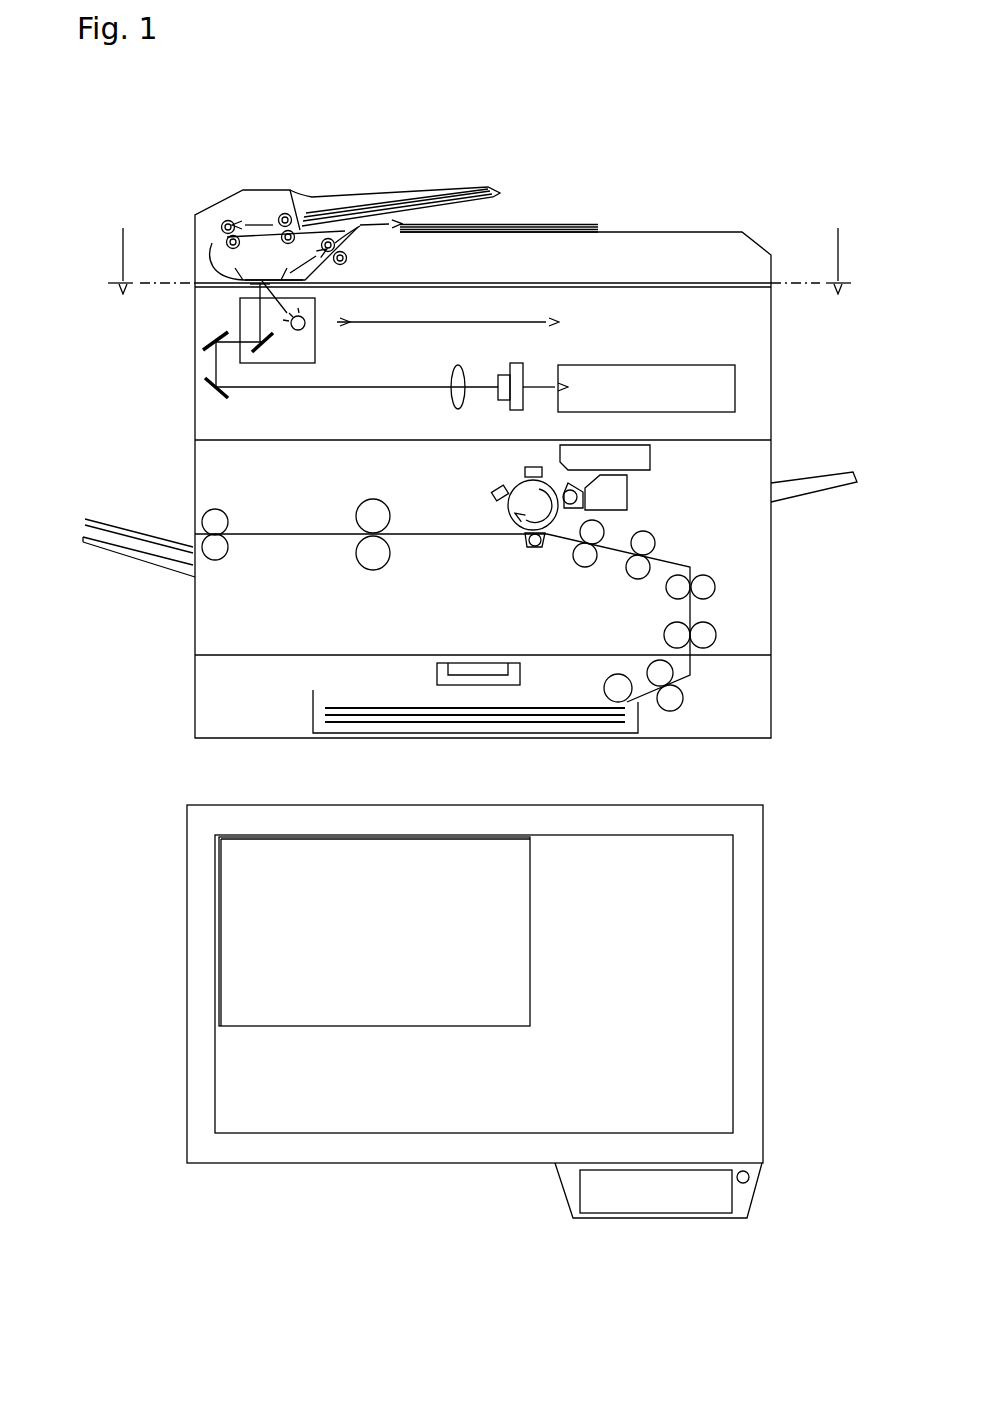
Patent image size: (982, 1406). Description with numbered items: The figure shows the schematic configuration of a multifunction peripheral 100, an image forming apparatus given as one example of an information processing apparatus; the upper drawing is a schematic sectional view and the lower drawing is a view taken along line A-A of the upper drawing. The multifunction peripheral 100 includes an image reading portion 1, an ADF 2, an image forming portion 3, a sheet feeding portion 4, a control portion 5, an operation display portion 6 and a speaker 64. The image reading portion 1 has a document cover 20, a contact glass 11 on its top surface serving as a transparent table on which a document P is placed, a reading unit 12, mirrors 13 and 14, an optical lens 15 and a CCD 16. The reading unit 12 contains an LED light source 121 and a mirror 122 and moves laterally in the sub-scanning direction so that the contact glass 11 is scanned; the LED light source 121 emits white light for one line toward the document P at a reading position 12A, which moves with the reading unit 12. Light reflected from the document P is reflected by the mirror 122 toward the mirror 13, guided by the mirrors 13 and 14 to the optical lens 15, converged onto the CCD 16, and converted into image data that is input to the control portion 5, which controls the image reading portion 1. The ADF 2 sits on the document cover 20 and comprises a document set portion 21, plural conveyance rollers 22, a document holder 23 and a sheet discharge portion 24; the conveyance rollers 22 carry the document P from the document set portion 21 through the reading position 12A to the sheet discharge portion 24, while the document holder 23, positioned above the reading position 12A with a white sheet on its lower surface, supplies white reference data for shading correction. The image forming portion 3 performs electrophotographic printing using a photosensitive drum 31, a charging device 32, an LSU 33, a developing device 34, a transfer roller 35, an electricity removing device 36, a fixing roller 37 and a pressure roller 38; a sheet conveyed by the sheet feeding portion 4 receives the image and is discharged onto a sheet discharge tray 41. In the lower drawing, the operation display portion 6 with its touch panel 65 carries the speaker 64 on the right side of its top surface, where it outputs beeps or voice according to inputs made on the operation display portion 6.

The multifunction peripheral 100 is at (146, 182).
The image reading portion 1 is at (772, 349).
The ADF 2 is at (307, 157).
The document cover 20 is at (772, 268).
The document set portion 21 is at (437, 190).
The conveyance rollers 22 is at (226, 223).
The document holder 23 is at (260, 280).
The sheet discharge portion 24 is at (475, 234).
The document P is at (398, 192).
The contact glass 11 is at (597, 288).
The reading unit 12 is at (316, 304).
The reading position 12A is at (246, 288).
The LED light source 121 is at (306, 328).
The mirror 122 is at (265, 348).
The mirror 13 is at (203, 342).
The mirror 14 is at (205, 385).
The optical lens 15 is at (452, 364).
The CCD 16 is at (518, 363).
The control portion 5 is at (736, 398).
The image forming portion 3 is at (772, 568).
The photosensitive drum 31 is at (510, 515).
The charging device 32 is at (522, 470).
The LSU 33 is at (651, 453).
The developing device 34 is at (577, 513).
The transfer roller 35 is at (535, 549).
The electricity removing device 36 is at (495, 490).
The fixing roller 37 is at (373, 498).
The pressure roller 38 is at (360, 565).
The sheet discharge tray 41 is at (133, 556).
The sheet feeding portion 4 is at (772, 690).
The operation display portion 6 is at (768, 1192).
The speaker 64 is at (750, 1176).
The touch panel 65 is at (579, 1197).